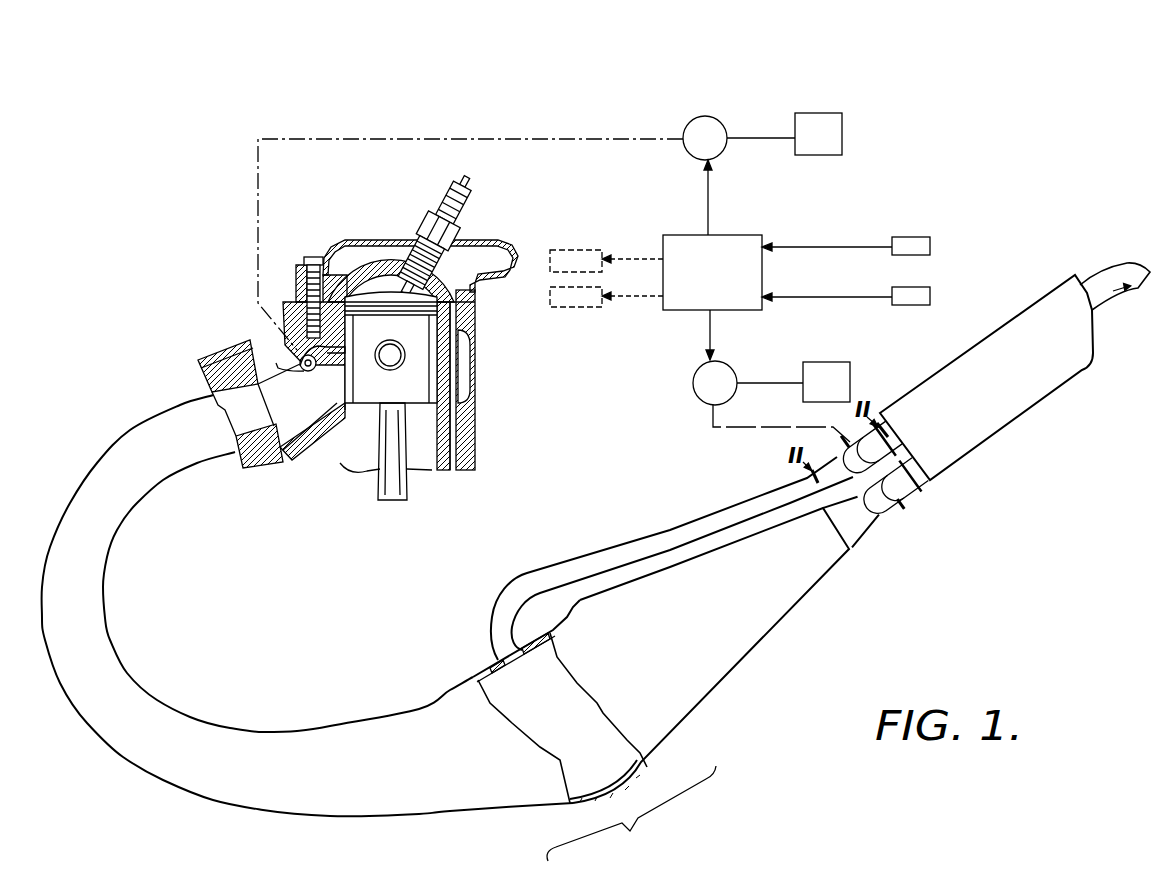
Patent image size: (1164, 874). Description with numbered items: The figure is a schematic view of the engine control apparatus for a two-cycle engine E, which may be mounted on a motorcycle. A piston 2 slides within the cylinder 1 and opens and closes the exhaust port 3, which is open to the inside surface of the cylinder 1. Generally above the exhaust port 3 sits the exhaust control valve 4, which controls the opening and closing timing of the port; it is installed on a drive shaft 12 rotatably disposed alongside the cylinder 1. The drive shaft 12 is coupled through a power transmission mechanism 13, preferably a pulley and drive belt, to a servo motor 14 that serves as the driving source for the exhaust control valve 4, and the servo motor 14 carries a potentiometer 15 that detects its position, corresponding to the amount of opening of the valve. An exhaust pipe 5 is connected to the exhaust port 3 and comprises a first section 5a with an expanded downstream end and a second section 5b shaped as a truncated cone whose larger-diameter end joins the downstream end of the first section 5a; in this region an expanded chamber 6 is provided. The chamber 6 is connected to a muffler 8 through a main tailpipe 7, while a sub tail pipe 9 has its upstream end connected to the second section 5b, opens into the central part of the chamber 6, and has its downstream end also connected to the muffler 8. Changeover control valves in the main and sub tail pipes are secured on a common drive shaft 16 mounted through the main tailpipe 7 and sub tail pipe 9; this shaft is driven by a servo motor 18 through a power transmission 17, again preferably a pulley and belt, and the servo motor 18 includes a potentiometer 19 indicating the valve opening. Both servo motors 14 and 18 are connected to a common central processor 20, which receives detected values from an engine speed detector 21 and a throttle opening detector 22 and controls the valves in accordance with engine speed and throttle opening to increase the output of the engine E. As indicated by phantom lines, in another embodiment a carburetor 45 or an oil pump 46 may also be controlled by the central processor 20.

The two-cycle engine E is at (490, 352).
The cylinder 1 is at (362, 450).
The piston 2 is at (419, 398).
The exhaust port 3 is at (337, 380).
The exhaust control valve 4 is at (343, 351).
The exhaust pipe 5 is at (631, 813).
The first exhaust pipe section 5a is at (527, 808).
The second exhaust pipe section 5b is at (686, 727).
The expanded chamber 6 is at (571, 721).
The main tailpipe 7 is at (862, 508).
The muffler 8 is at (1022, 408).
The sub tail pipe 9 is at (619, 541).
The drive shaft 12 is at (303, 372).
The power transmission mechanism 13 is at (527, 138).
The servo motor 14 is at (714, 120).
The potentiometer 15 is at (838, 123).
The common drive shaft 16 is at (897, 496).
The power transmission 17 is at (731, 426).
The servo motor 18 is at (702, 366).
The potentiometer 19 is at (848, 370).
The central processor 20 is at (721, 287).
The engine speed detector 21 is at (925, 238).
The throttle opening detector 22 is at (927, 290).
The carburetor 45 is at (580, 250).
The oil pump 46 is at (588, 308).